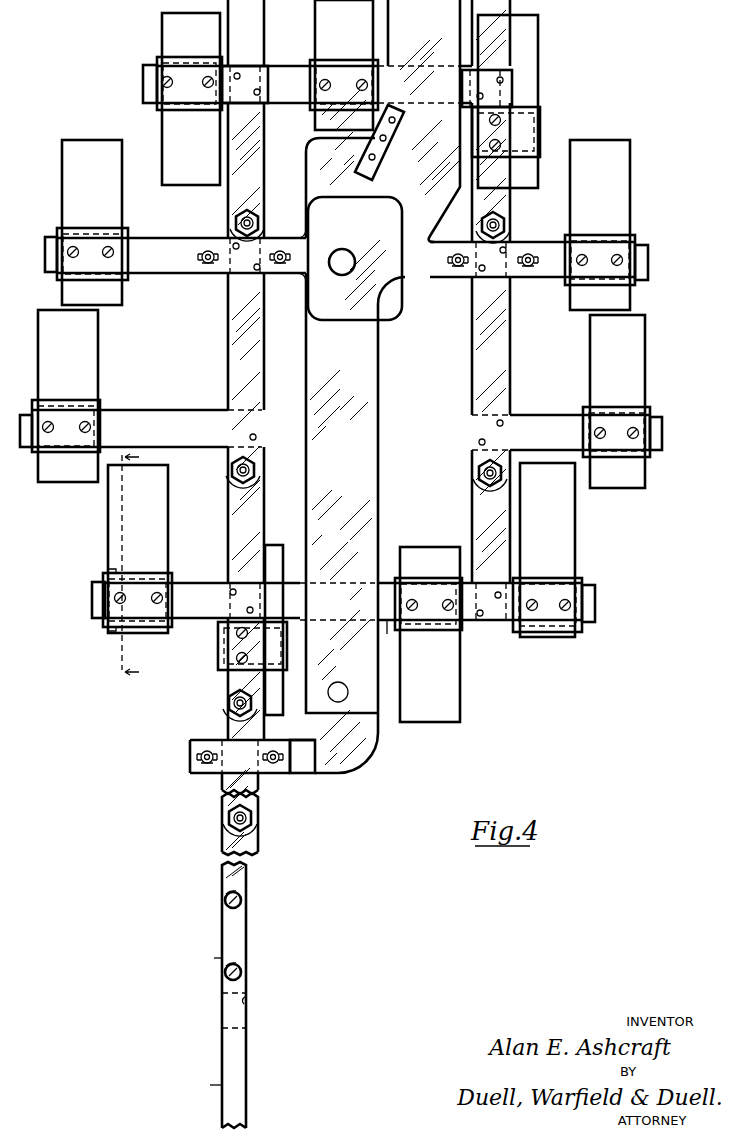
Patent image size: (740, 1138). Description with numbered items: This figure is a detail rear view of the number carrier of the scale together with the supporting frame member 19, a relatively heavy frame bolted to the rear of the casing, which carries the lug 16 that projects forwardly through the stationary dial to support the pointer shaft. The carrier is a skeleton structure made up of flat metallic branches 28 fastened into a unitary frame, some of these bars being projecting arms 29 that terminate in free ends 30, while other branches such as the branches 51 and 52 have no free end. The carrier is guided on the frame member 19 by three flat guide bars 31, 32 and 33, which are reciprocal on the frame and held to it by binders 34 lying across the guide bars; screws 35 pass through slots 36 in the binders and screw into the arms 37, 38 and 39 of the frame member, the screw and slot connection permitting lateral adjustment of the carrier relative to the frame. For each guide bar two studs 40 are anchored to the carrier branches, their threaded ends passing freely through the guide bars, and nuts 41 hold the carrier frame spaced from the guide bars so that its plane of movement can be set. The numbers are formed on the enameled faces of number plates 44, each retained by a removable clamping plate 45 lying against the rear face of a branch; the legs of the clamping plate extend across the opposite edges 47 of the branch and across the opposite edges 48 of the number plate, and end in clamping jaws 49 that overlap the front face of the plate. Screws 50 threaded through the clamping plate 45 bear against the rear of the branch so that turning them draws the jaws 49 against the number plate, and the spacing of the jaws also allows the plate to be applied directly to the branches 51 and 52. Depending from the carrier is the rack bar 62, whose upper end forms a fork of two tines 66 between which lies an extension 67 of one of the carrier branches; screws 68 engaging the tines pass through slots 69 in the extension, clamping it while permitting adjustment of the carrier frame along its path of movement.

The lug 16 is at (402, 132).
The frame member 19 is at (383, 386).
The branches 28 is at (190, 420).
The branches having free ends 29 is at (172, 246).
The free ends 30 is at (143, 80).
The guide bar 31 is at (232, 358).
The guide bar 32 is at (480, 380).
The guide bar 33 is at (228, 737).
The binders 34 is at (232, 272).
The screws 35 is at (209, 250).
The slots 36 is at (204, 266).
The arm 37 is at (400, 295).
The arm 38 is at (300, 275).
The arm 39 is at (292, 740).
The studs 40 is at (236, 218).
The nuts 41 is at (258, 218).
The number plates 44 is at (172, 30).
The clamping plate 45 is at (193, 70).
The edges of the branch 47 is at (565, 422).
The edges of the number plate 48 is at (590, 330).
The clamping jaws 49 is at (110, 572).
The screws 50 is at (330, 92).
The branch 51 is at (390, 637).
The branch 52 is at (290, 76).
The rack bar 62 is at (206, 1087).
The tines 66 is at (240, 946).
The extension 67 is at (248, 995).
The screws 68 is at (225, 900).
The slots 69 is at (236, 894).